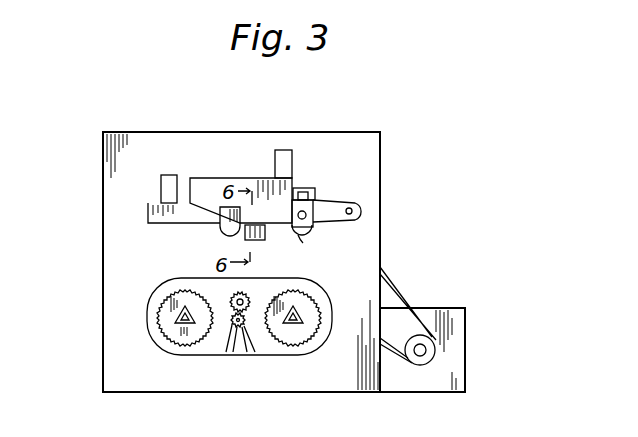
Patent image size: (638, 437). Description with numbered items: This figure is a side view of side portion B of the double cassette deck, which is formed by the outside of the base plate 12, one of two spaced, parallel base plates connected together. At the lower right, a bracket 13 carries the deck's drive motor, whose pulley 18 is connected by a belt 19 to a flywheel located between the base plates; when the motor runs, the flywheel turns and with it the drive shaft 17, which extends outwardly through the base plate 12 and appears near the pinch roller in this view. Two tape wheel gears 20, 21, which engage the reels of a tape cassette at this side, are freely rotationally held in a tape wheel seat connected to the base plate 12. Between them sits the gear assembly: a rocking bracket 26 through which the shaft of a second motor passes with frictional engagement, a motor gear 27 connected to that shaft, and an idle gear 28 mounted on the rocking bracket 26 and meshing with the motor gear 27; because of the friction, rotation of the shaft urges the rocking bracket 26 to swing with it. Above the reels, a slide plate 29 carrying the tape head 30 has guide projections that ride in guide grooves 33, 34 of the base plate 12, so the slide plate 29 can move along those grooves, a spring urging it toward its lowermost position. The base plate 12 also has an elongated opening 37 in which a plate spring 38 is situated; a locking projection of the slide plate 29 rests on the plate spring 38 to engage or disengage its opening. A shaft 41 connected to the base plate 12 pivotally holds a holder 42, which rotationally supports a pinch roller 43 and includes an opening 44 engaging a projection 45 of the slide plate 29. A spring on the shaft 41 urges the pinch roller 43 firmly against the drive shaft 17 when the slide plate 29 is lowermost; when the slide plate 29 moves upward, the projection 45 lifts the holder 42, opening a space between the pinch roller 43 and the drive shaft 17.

The base plate 12 is at (368, 152).
The bracket 13 is at (452, 328).
The drive shaft 17 is at (300, 233).
The pulley 18 is at (424, 364).
The belt 19 is at (400, 293).
The tape wheel gear 20 is at (293, 338).
The tape wheel gear 21 is at (186, 338).
The rocking bracket 26 is at (242, 347).
The motor gear 27 is at (230, 352).
The idle gear 28 is at (232, 298).
The slide plate 29 is at (207, 178).
The tape head 30 is at (220, 224).
The guide groove 33 is at (284, 150).
The guide groove 34 is at (167, 178).
The elongated opening 37 is at (265, 229).
The plate spring 38 is at (246, 238).
The shaft 41 is at (353, 209).
The holder 42 is at (337, 202).
The pinch roller 43 is at (313, 228).
The opening 44 is at (312, 198).
The projection 45 is at (303, 188).